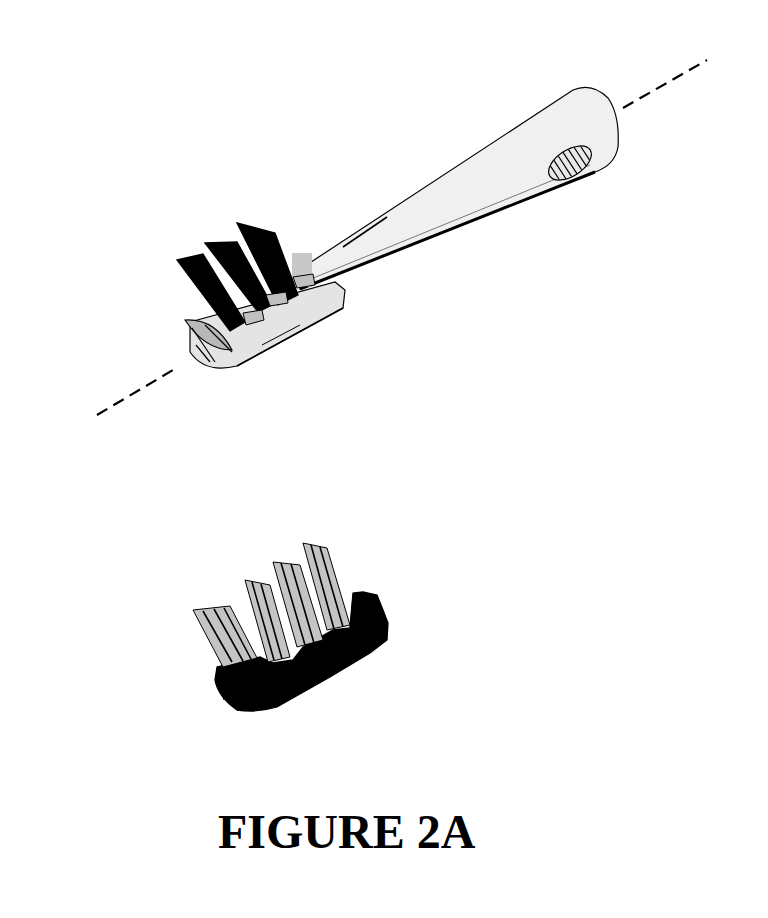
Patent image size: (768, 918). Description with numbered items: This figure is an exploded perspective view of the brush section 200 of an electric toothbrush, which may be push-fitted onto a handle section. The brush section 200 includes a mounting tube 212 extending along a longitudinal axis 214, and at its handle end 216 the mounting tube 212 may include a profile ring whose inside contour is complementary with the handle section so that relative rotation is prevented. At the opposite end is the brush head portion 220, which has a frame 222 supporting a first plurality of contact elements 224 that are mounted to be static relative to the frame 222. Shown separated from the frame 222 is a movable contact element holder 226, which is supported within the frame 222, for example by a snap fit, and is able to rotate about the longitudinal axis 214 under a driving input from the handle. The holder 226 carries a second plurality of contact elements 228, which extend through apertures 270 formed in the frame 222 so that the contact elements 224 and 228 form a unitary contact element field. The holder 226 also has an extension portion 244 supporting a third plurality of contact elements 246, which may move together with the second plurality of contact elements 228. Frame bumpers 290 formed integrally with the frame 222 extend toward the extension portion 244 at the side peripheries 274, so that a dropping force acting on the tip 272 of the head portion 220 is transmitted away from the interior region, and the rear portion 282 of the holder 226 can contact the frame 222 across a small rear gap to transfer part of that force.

The brush section 200 is at (468, 597).
The mounting tube 212 is at (483, 217).
The longitudinal axis 214 is at (667, 80).
The handle end 216 is at (549, 113).
The brush head portion 220 is at (222, 121).
The frame 222 is at (330, 297).
The first plurality of contact elements 224 is at (180, 260).
The movable contact element holder 226 is at (333, 678).
The second plurality of contact elements 228 is at (247, 573).
The extension portion 244 is at (273, 707).
The third plurality of contact elements 246 is at (207, 603).
The apertures 270 is at (257, 323).
The tip 272 is at (218, 693).
The side peripheries 274 is at (282, 333).
The rear portion 282 is at (384, 619).
The frame bumpers 290 is at (190, 330).